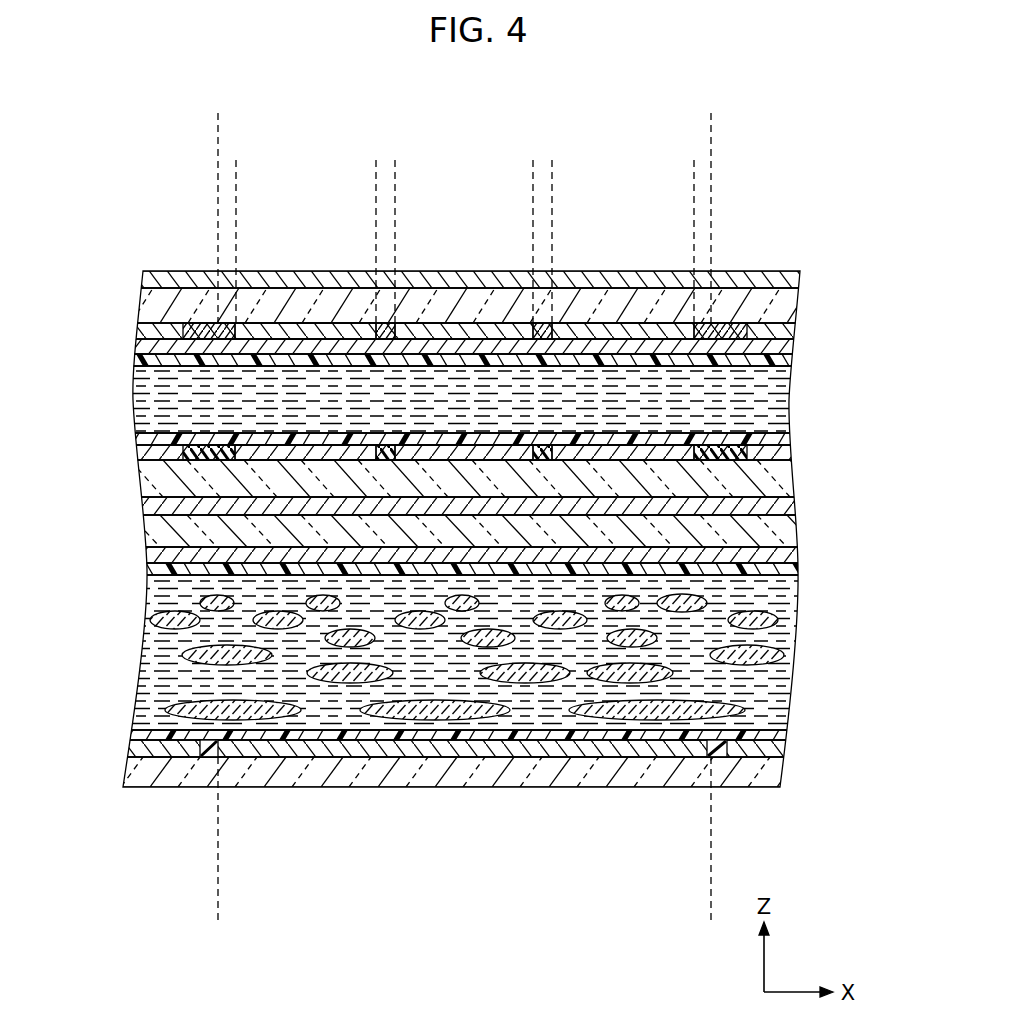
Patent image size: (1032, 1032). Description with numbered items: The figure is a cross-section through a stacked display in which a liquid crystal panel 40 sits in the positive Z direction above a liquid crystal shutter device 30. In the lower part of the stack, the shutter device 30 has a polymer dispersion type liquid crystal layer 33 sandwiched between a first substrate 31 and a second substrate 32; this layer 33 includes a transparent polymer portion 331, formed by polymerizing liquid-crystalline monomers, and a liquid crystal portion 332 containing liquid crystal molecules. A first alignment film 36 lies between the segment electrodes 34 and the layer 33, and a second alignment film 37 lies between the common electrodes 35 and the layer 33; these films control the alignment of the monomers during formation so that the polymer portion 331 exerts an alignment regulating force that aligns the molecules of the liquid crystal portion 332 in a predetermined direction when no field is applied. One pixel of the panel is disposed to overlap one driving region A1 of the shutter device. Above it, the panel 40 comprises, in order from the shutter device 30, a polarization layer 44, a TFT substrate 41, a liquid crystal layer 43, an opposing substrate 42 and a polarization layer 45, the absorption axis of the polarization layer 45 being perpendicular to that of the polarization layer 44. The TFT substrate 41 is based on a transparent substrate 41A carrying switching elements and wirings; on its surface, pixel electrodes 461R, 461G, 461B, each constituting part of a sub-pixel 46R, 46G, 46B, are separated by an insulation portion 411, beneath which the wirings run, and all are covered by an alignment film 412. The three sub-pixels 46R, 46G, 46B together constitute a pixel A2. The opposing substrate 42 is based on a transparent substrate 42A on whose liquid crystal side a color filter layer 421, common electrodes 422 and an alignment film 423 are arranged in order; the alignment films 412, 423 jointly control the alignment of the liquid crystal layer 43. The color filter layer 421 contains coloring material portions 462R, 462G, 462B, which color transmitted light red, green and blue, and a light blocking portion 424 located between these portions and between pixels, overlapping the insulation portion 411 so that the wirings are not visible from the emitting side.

The liquid crystal shutter device 30 is at (491, 679).
The first substrate 31 is at (480, 787).
The second substrate 32 is at (807, 515).
The polymer dispersion type liquid crystal layer 33 is at (480, 709).
The polymer portion 331 is at (437, 714).
The liquid crystal portion 332 is at (525, 722).
The segment electrodes 34 is at (612, 748).
The common electrodes 35 is at (145, 558).
The first alignment film 36 is at (140, 735).
The second alignment film 37 is at (147, 570).
The liquid crystal panel 40 is at (479, 361).
The TFT substrate 41 is at (451, 360).
The transparent substrate 41A is at (143, 480).
The insulation portion 411 is at (720, 445).
The alignment film 412 is at (137, 440).
The opposing substrate 42 is at (449, 300).
The transparent substrate 42A is at (137, 312).
The color filter layer 421 is at (442, 275).
The common electrodes 422 is at (135, 350).
The alignment film 423 is at (137, 360).
The light blocking portion 424 is at (203, 323).
The liquid crystal layer 43 is at (807, 367).
The polarization layer 44 is at (485, 501).
The polarization layer 45 is at (800, 280).
The sub-pixel 46R is at (376, 177).
The sub-pixel 46G is at (533, 177).
The sub-pixel 46B is at (552, 177).
The pixel electrode 461R is at (308, 443).
The pixel electrode 461G is at (467, 443).
The pixel electrode 461B is at (623, 443).
The coloring material portion 462R is at (283, 323).
The coloring material portion 462G is at (458, 323).
The coloring material portion 462B is at (608, 323).
The driving region A1 is at (711, 896).
The pixel A2 is at (711, 123).